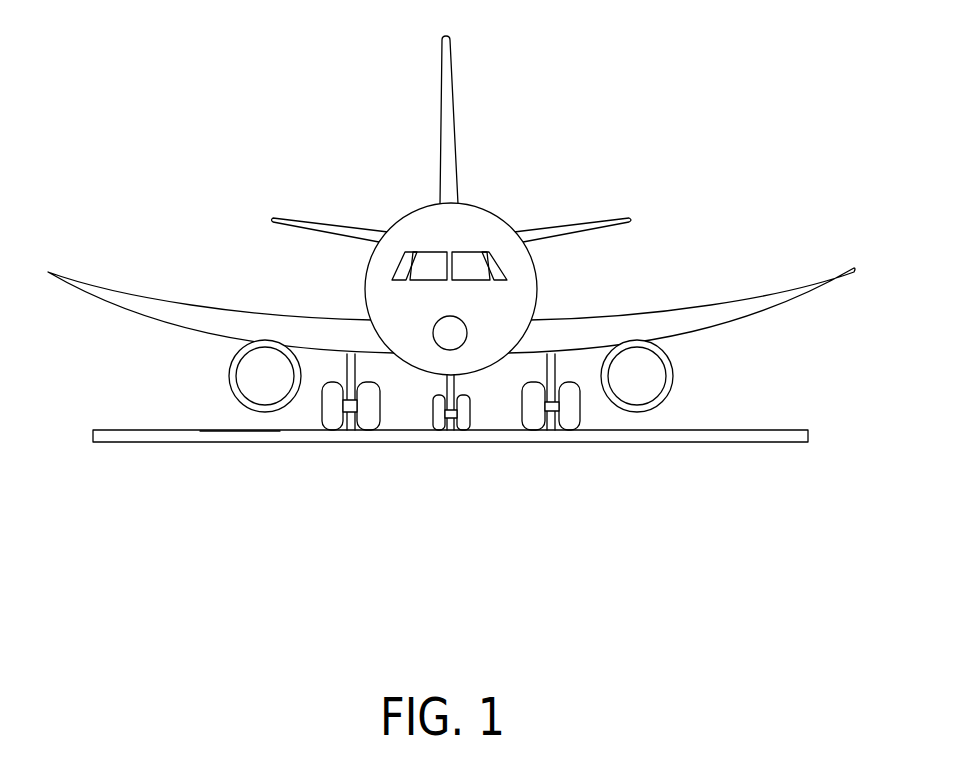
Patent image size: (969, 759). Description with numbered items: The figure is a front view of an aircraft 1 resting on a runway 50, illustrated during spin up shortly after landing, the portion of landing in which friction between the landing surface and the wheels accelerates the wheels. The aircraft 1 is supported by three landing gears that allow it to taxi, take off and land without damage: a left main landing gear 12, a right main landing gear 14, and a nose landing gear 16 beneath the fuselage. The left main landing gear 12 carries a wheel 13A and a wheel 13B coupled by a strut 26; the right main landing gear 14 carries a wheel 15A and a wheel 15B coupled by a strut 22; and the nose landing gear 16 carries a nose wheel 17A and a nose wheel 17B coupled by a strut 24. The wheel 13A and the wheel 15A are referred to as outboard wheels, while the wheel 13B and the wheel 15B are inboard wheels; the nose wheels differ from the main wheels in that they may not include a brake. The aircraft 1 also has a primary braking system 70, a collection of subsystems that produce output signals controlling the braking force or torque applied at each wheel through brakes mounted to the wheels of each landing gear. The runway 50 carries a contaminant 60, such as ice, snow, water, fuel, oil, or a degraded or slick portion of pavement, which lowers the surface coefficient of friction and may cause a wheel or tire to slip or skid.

The aircraft 1 is at (298, 125).
The left main landing gear 12 is at (590, 412).
The wheel 13A is at (583, 422).
The wheel 13B is at (538, 378).
The right main landing gear 14 is at (312, 414).
The wheel 15A is at (320, 426).
The wheel 15B is at (383, 428).
The nose landing gear 16 is at (477, 393).
The nose wheel 17A is at (470, 422).
The nose wheel 17B is at (437, 428).
The strut 22 is at (344, 432).
The strut 24 is at (447, 428).
The strut 26 is at (554, 431).
The runway 50 is at (119, 437).
The contaminant 60 is at (240, 431).
The primary braking system 70 is at (420, 375).